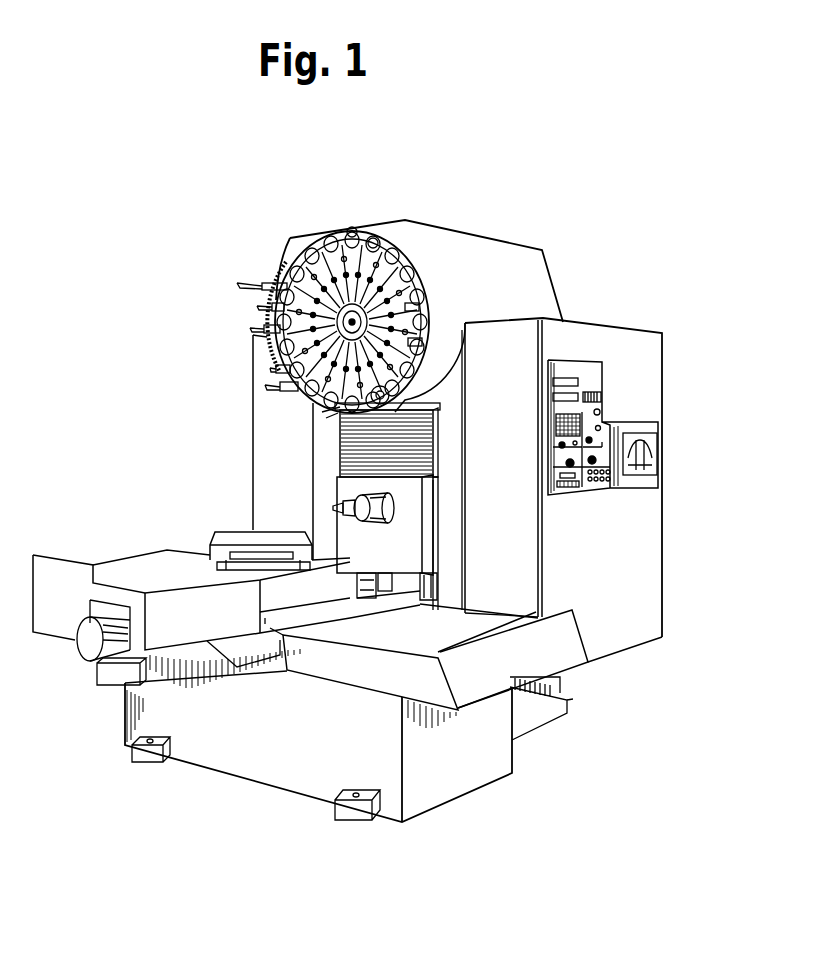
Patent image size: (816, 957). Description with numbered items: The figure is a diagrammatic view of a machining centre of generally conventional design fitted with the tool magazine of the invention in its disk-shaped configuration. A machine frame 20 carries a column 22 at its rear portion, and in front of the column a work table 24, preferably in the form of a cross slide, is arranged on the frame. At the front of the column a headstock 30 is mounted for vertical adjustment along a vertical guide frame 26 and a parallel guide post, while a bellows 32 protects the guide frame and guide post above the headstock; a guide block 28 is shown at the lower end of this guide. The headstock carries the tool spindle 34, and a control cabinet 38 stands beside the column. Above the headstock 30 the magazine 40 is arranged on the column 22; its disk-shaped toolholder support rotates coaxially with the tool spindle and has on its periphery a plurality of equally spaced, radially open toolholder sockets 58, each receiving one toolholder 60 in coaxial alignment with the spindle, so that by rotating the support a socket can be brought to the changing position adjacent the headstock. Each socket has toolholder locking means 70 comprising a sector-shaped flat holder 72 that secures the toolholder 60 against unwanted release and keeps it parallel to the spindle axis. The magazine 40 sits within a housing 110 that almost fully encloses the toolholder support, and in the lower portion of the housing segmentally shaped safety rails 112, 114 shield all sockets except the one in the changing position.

The machine frame 20 is at (245, 738).
The column 22 is at (403, 578).
The work table 24 is at (176, 527).
The vertical guide frame 26 is at (438, 587).
The guide block 28 is at (385, 595).
The headstock 30 is at (434, 523).
The bellows 32 is at (412, 452).
The tool spindle 34 is at (353, 528).
The control cabinet 38 is at (638, 358).
The magazine 40 is at (333, 228).
The toolholder sockets 58 is at (318, 233).
The toolholder 60 is at (273, 310).
The toolholder locking means 70 is at (257, 357).
The holder 72 is at (372, 240).
The housing 110 is at (455, 243).
The safety rail 112 is at (436, 413).
The safety rail 114 is at (330, 418).